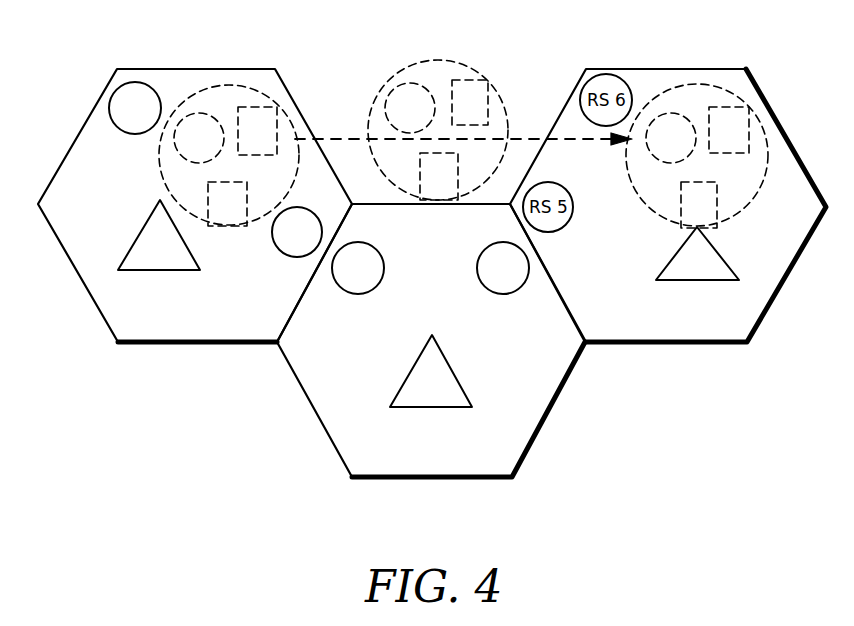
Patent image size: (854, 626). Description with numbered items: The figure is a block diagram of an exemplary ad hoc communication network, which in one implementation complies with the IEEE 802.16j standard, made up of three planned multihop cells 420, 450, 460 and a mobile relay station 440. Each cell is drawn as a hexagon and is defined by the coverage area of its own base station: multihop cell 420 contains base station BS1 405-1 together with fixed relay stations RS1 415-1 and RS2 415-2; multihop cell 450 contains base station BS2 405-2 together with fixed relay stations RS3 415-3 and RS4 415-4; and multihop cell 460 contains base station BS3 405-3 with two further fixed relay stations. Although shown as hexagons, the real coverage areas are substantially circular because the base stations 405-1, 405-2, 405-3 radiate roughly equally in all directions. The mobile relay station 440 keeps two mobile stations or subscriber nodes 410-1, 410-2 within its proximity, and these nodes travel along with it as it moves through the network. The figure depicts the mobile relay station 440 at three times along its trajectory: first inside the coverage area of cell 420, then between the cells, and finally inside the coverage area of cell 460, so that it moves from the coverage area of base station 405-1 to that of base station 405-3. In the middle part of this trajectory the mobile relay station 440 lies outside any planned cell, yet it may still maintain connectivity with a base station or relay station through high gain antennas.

The multihop cell 420 is at (133, 67).
The multihop cell 450 is at (432, 478).
The multihop cell 460 is at (667, 343).
The base station 405-1 is at (160, 271).
The base station 405-2 is at (432, 408).
The base station 405-3 is at (698, 281).
The fixed relay station 415-1 is at (125, 134).
The fixed relay station 415-2 is at (295, 258).
The fixed relay station 415-3 is at (358, 295).
The fixed relay station 415-4 is at (503, 295).
The mobile relay station 440 is at (199, 113).
The mobile station 410-1 is at (208, 190).
The mobile station 410-2 is at (259, 108).